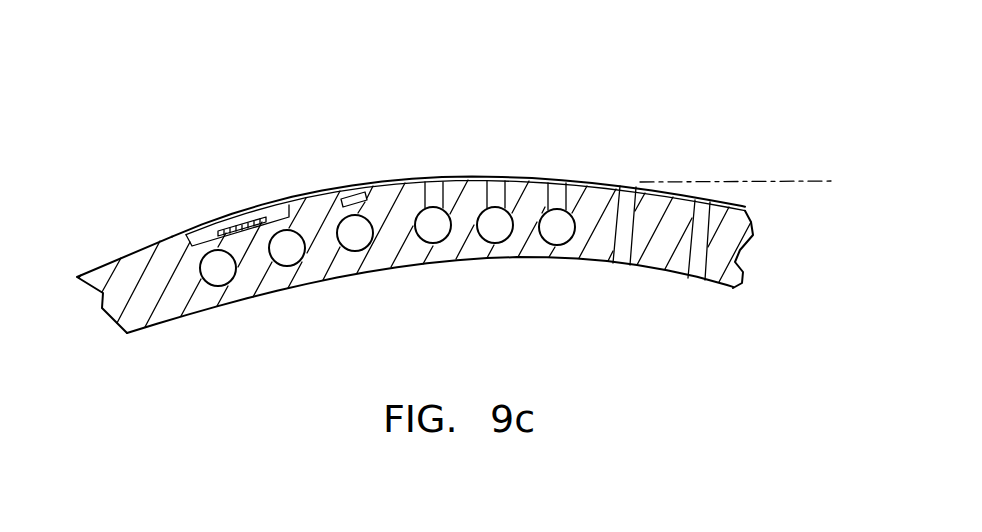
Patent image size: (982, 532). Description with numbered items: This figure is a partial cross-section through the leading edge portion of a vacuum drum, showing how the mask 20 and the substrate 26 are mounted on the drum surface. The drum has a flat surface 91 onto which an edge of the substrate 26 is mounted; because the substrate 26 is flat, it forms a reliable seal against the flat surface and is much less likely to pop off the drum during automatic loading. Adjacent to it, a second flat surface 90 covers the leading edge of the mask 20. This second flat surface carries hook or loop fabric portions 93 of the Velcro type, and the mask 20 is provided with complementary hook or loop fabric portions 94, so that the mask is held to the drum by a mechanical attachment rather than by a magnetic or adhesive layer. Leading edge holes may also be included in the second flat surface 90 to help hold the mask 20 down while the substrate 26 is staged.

The mask 20 is at (317, 194).
The substrate 26 is at (543, 180).
The second flat surface 90 is at (103, 177).
The flat surface 91 is at (605, 173).
The hook or loop fabric portions 93 is at (242, 237).
The complementary hook or loop fabric portions 94 is at (235, 224).